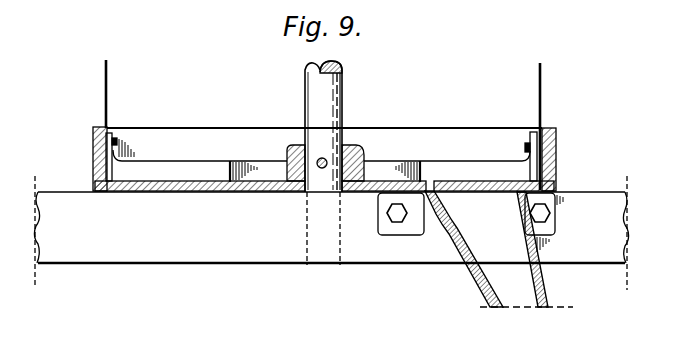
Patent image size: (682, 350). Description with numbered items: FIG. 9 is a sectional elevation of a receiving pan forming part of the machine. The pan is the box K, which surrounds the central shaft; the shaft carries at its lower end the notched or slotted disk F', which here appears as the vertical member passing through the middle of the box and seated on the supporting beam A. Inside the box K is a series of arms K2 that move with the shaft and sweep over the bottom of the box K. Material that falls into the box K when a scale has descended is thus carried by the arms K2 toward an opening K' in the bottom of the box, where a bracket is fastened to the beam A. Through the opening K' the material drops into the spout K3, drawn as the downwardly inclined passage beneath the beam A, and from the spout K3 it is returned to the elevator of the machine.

The supporting beam or plank A is at (331, 233).
The notched or slotted disk F' is at (323, 163).
The box K is at (324, 125).
The arms K2 is at (318, 163).
The opening K' is at (470, 222).
The spout K3 is at (499, 249).